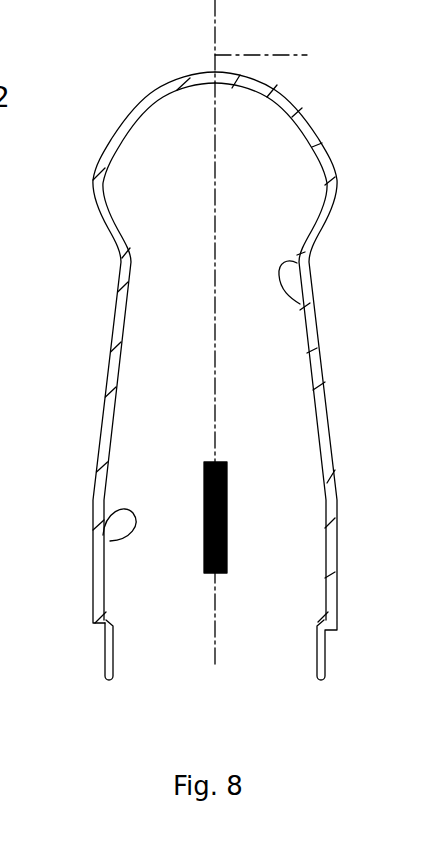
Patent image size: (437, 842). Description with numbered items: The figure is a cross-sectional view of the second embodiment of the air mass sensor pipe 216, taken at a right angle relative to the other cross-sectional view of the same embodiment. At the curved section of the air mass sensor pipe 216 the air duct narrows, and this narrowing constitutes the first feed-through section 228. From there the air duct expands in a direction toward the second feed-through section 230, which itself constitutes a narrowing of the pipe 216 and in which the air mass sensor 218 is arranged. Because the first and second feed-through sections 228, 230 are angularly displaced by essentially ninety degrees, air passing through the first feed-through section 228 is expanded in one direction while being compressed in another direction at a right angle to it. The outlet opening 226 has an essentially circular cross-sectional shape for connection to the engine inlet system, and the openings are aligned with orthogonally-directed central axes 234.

The air mass sensor pipe 216 is at (115, 342).
The air mass sensor 218 is at (227, 497).
The outlet opening 226 is at (112, 655).
The first feed-through section 228 is at (300, 304).
The second feed-through section 230 is at (110, 541).
The central axis 234 is at (297, 55).